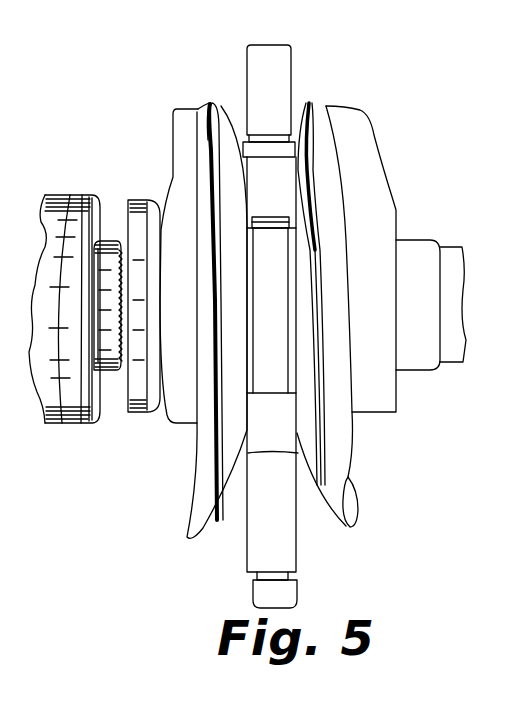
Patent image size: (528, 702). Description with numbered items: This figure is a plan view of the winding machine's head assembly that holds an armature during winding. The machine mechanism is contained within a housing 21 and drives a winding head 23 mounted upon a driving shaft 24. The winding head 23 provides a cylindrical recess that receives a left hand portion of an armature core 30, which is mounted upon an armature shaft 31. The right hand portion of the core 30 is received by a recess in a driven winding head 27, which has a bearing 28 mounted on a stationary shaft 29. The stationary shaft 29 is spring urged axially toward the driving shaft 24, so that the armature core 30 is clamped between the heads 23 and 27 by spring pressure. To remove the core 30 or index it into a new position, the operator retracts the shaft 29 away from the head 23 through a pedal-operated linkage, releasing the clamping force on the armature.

The housing 21 is at (58, 195).
The winding head 23 is at (209, 102).
The driving shaft 24 is at (107, 242).
The driven winding head 27 is at (327, 142).
The bearing 28 is at (409, 237).
The stationary shaft 29 is at (456, 240).
The armature core 30 is at (273, 257).
The armature shaft 31 is at (268, 47).